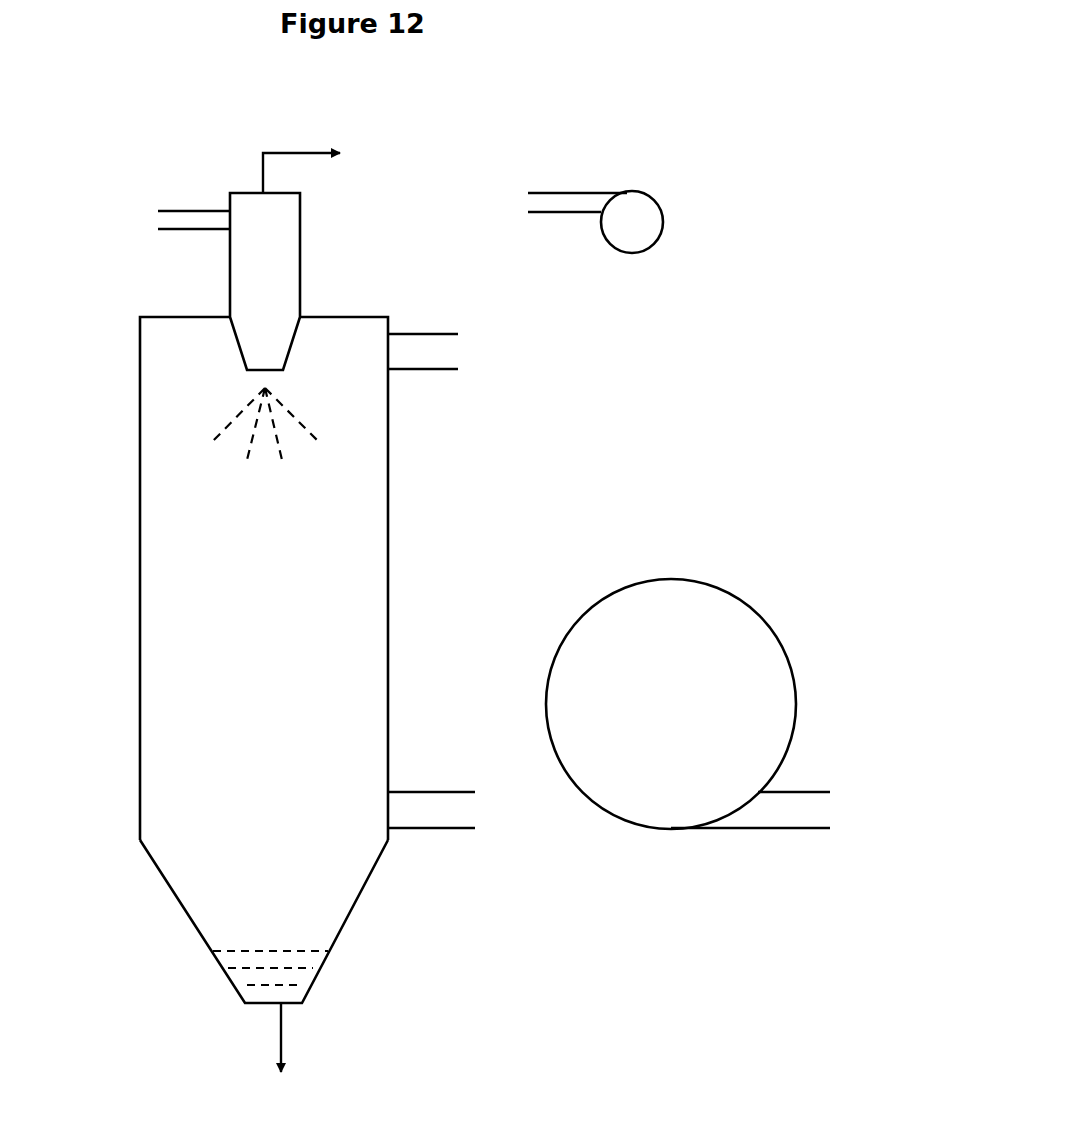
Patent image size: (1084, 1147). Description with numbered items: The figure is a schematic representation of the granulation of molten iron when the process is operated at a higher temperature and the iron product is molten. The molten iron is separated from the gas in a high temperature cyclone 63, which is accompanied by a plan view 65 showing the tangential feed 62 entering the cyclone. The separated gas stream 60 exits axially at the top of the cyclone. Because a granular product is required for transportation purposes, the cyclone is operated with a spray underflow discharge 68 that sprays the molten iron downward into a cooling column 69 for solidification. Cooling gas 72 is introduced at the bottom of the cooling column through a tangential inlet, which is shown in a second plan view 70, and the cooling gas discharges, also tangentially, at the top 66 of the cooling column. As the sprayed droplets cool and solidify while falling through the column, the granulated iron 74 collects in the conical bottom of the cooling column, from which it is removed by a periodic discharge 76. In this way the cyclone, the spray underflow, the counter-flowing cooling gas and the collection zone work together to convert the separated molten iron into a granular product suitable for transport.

The separated gas stream 60 is at (324, 160).
The tangential feed 62 is at (120, 228).
The high temperature cyclone 63 is at (320, 262).
The plan view 65 is at (775, 172).
The top 66 is at (475, 352).
The spray underflow discharge 68 is at (264, 430).
The cooling column 69 is at (264, 578).
The plan view 70 is at (580, 597).
The cooling gas 72 is at (498, 810).
The granulated iron 74 is at (264, 921).
The periodic discharge 76 is at (307, 1037).